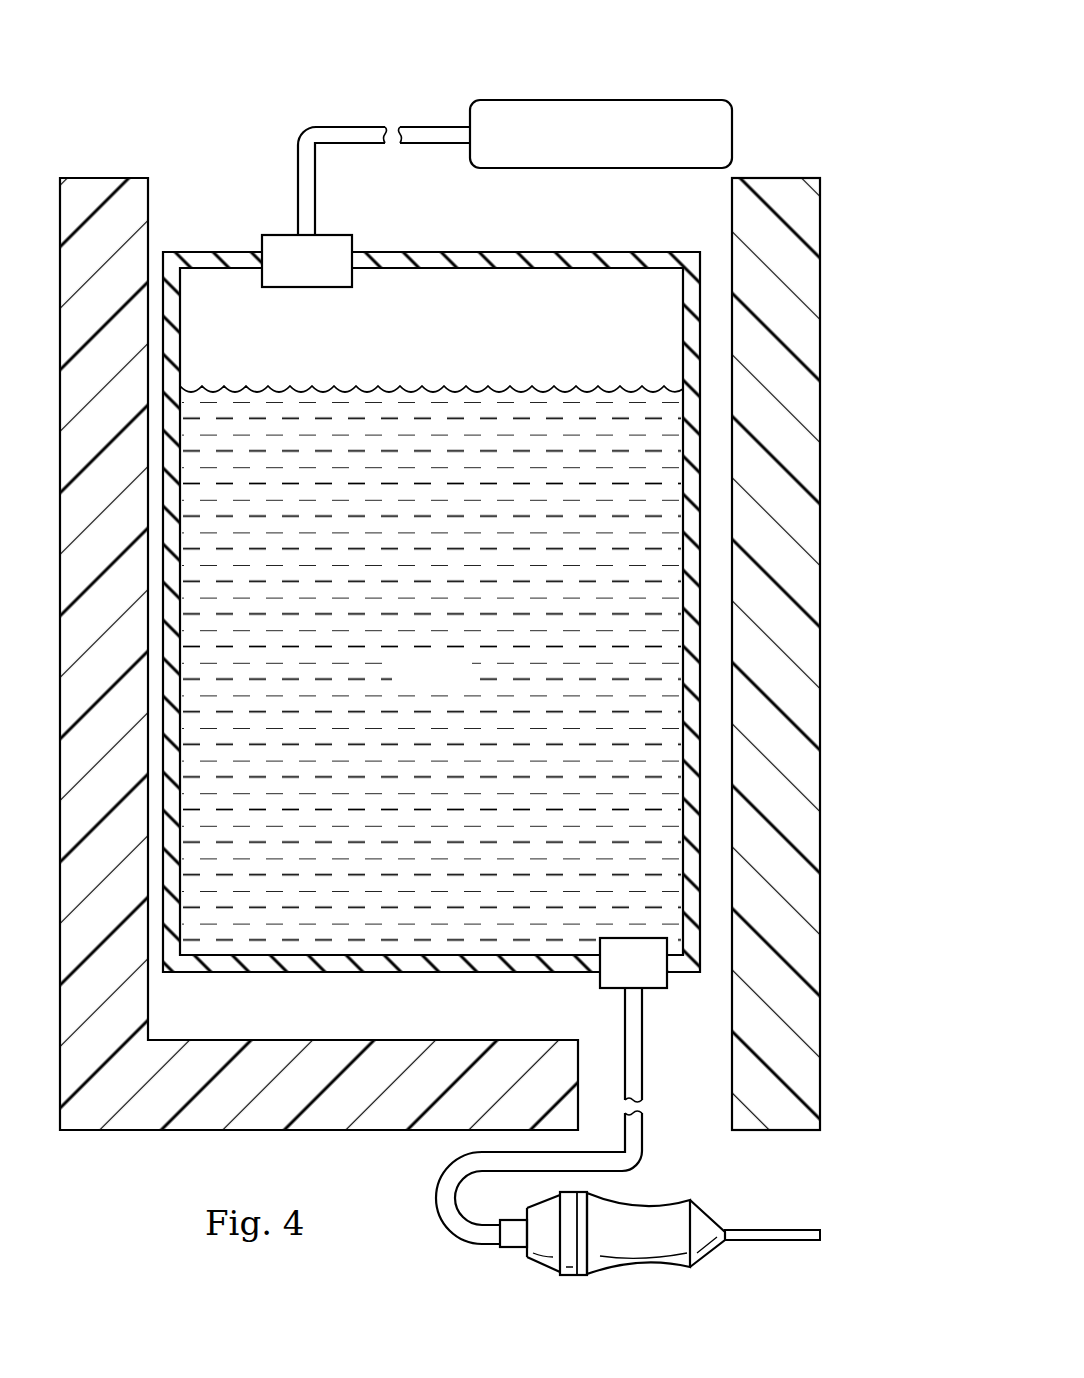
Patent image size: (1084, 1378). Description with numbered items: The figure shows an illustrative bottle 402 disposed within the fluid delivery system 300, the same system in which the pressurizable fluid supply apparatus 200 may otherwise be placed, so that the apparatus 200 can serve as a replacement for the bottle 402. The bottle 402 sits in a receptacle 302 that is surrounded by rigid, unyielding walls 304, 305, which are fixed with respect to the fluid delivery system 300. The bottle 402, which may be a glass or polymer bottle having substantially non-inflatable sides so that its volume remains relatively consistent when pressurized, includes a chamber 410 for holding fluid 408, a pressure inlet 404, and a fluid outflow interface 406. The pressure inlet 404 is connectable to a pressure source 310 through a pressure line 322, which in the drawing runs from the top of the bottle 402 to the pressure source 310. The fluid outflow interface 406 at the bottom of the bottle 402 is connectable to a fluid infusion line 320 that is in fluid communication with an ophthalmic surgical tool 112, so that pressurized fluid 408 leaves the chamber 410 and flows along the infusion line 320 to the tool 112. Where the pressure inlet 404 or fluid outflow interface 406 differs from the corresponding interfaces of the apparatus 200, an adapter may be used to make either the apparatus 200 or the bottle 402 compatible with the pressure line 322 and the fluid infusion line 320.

The ophthalmic surgical tool 112 is at (632, 1268).
The pressurizable fluid supply apparatus 200 is at (245, 153).
The fluid delivery system 300 is at (686, 60).
The receptacle 302 is at (392, 1018).
The wall 304 is at (104, 178).
The wall 305 is at (775, 178).
The pressure source 310 is at (578, 148).
The fluid infusion line 320 is at (647, 1076).
The pressure line 322 is at (317, 198).
The bottle 402 is at (230, 248).
The pressure inlet 404 is at (285, 277).
The fluid outflow interface 406 is at (651, 982).
The fluid 408 is at (410, 688).
The chamber 410 is at (410, 343).